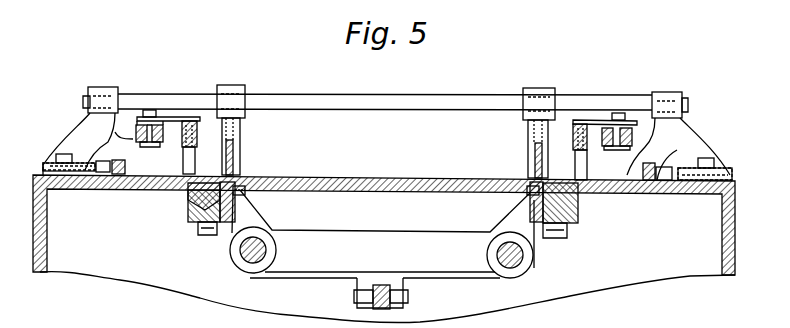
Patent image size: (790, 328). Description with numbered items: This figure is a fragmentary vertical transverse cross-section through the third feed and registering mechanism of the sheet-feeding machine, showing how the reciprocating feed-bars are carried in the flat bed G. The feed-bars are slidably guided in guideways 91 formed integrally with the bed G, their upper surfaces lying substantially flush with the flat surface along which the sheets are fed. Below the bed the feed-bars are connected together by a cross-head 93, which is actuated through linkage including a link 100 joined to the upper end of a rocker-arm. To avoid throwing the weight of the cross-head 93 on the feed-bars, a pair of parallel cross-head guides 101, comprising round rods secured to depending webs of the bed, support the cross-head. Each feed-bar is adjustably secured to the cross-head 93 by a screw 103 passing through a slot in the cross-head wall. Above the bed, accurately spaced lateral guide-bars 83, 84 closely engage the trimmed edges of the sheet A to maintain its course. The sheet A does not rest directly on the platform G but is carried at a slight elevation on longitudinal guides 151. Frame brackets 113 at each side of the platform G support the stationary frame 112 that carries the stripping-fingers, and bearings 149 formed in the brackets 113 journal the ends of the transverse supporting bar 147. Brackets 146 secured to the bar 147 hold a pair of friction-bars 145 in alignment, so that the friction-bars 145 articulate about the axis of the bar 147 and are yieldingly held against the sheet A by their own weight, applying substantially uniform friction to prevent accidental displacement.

The transverse supporting bar 147 is at (278, 100).
The bearing 149 is at (106, 90).
The frame bracket 113 is at (78, 132).
The lateral guide-bar 83 is at (125, 168).
The stationary frame 112 is at (166, 118).
The screw 103 is at (246, 190).
The guideway 91 is at (162, 201).
The sheet A is at (428, 180).
The cross-head 93 is at (345, 246).
The cross-head guide 101 is at (262, 251).
The link 100 is at (382, 290).
The bracket 146 is at (541, 95).
The friction-bar 145 is at (536, 168).
The longitudinal guide 151 is at (562, 150).
The lateral guide-bar 84 is at (642, 170).
The flat bed G is at (627, 190).